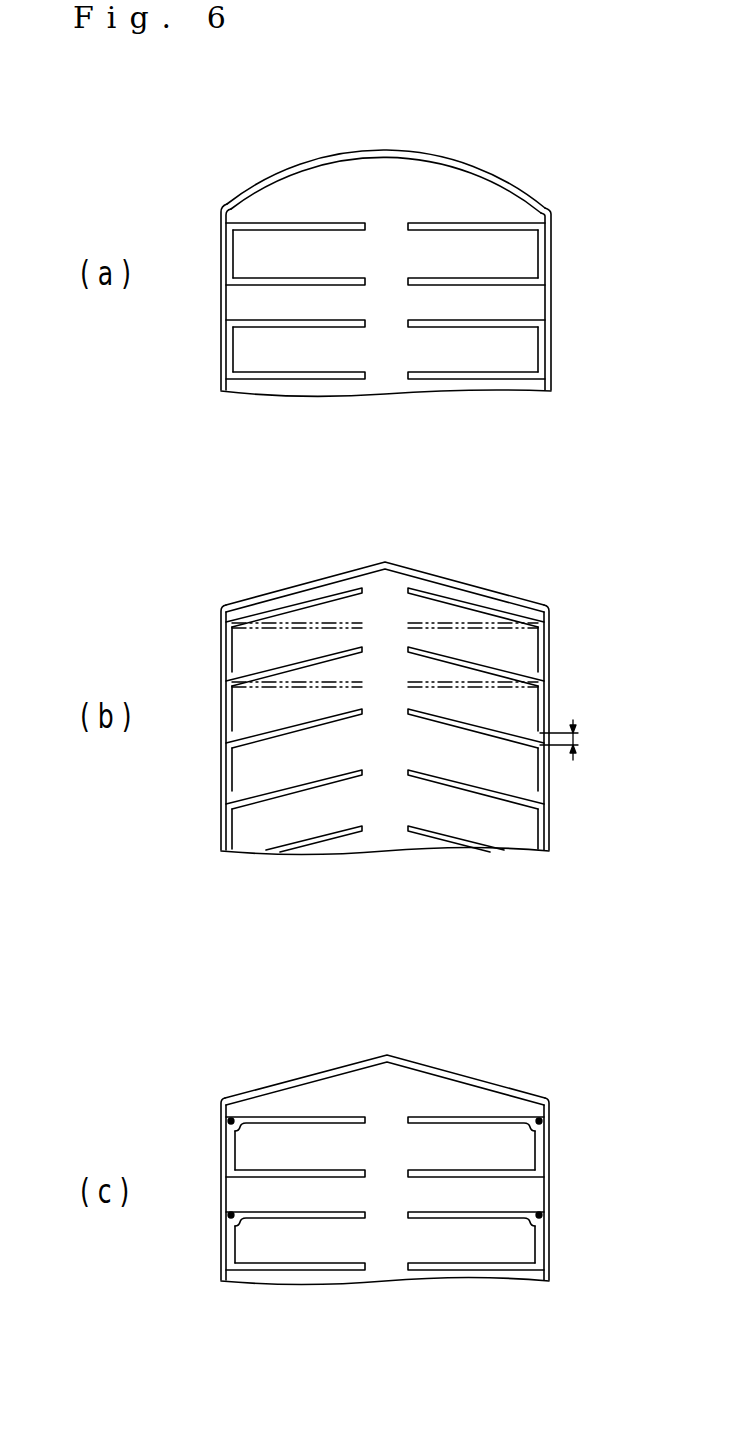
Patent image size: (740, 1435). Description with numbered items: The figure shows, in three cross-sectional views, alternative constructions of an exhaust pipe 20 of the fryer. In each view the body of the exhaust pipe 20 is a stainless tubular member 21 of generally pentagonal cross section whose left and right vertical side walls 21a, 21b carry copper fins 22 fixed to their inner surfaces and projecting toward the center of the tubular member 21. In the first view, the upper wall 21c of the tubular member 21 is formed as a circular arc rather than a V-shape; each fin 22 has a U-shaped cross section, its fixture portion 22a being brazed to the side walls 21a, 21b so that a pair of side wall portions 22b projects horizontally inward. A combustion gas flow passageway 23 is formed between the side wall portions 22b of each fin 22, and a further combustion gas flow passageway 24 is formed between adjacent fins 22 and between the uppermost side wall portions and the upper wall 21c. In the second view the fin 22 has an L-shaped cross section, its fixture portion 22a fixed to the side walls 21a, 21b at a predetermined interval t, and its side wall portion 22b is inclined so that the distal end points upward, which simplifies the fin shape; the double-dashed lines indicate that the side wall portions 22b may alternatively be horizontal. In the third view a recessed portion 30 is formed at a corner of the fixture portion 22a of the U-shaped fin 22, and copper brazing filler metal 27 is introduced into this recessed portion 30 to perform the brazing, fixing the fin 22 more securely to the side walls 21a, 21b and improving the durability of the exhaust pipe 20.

The exhaust pipe 20 is at (206, 184).
The tubular member 21 is at (221, 391).
The side wall 21a is at (221, 352).
The side wall 21b is at (551, 352).
The upper wall 21c is at (381, 148).
The fin 22 is at (527, 218).
The fixture portion 22a is at (541, 248).
The side wall portion 22b is at (472, 226).
The combustion gas flow passageway 23 is at (512, 372).
The combustion gas flow passageway 24 is at (291, 195).
The copper brazing filler metal 27 is at (228, 1216).
The recessed portion 30 is at (232, 1115).
The predetermined interval t is at (580, 746).